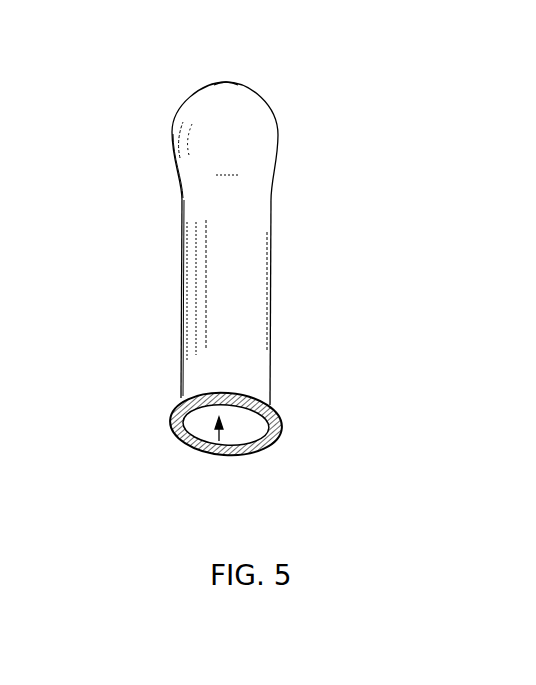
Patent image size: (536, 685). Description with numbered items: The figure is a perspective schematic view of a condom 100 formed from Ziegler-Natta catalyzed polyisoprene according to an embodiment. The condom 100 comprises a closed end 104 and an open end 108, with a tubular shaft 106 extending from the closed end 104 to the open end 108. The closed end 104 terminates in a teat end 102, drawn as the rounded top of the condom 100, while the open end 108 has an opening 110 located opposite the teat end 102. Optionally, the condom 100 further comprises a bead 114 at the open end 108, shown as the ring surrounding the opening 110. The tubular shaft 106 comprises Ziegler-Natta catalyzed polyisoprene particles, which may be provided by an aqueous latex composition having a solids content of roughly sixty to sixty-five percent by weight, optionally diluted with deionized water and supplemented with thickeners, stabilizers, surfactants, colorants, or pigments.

The condom 100 is at (311, 218).
The teat end 102 is at (226, 82).
The closed end 104 is at (172, 127).
The tubular shaft 106 is at (181, 275).
The open end 108 is at (252, 400).
The opening 110 is at (214, 452).
The bead 114 is at (171, 426).